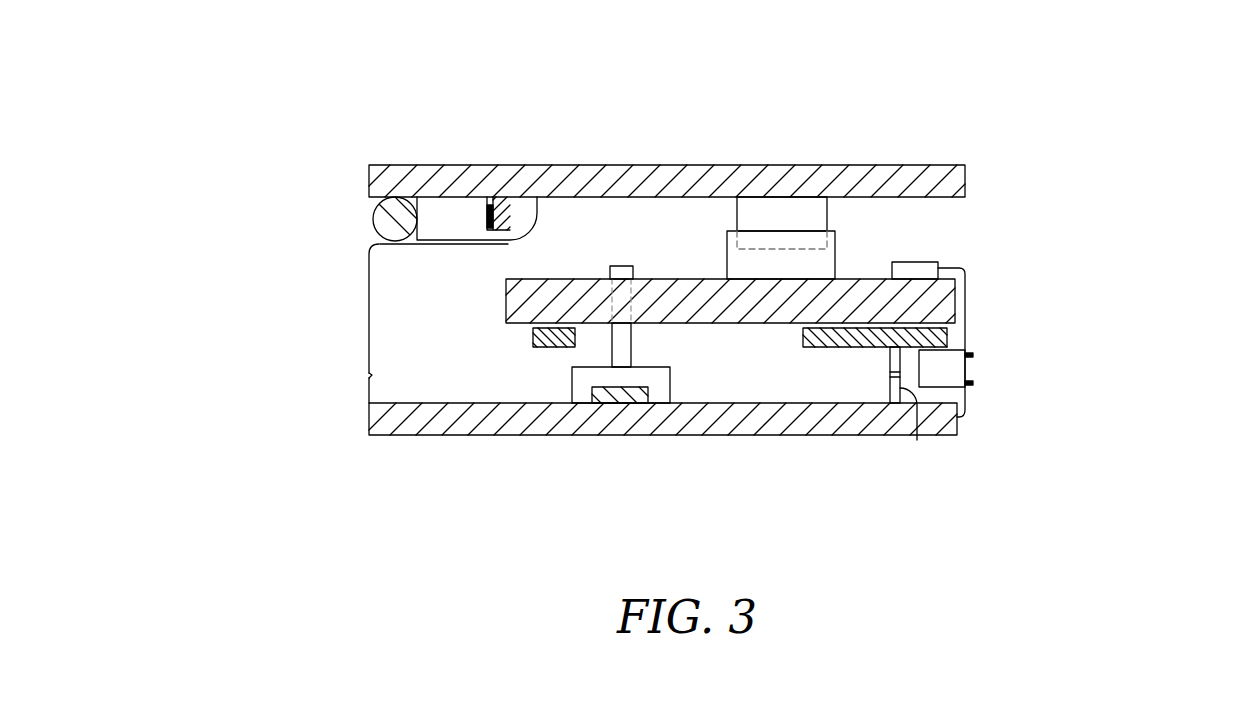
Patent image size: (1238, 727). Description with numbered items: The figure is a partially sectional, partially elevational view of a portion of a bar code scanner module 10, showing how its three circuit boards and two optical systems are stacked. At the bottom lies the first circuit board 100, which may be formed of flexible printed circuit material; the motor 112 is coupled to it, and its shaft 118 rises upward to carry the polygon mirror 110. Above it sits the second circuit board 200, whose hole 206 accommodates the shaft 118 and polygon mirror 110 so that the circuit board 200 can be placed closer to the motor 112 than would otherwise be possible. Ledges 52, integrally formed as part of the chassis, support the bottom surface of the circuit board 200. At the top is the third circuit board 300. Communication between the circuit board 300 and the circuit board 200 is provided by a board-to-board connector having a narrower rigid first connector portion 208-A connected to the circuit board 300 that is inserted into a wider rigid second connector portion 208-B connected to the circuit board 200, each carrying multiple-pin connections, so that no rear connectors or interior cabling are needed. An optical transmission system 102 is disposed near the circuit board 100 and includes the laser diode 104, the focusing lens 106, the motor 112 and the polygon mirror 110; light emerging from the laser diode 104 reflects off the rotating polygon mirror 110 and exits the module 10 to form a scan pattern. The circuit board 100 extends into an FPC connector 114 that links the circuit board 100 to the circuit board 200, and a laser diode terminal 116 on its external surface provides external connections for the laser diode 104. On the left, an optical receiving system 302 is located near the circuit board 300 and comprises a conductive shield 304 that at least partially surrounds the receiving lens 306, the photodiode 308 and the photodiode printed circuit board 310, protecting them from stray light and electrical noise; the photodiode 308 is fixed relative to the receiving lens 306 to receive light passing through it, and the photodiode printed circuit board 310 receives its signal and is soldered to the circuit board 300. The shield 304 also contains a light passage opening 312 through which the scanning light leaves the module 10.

The bar code scanner module 10 is at (420, 110).
The optical receiving system 302 is at (232, 207).
The third circuit board 300 is at (369, 173).
The receiving lens 306 is at (374, 214).
The shield 304 is at (369, 325).
The light passage opening 312 is at (369, 375).
The photodiode 308 is at (487, 222).
The photodiode printed circuit board 310 is at (488, 205).
The first connector portion 208-A is at (827, 213).
The second connector portion 208-B is at (835, 257).
The second circuit board 200 is at (506, 297).
The hole 206 is at (605, 297).
The shaft 118 is at (632, 345).
The polygon mirror 110 is at (670, 387).
The motor 112 is at (632, 393).
The ledge 52 is at (533, 337).
The laser diode 104 is at (963, 402).
The laser diode terminal 116 is at (967, 369).
The optical transmission system 102 is at (1097, 406).
The FPC connector 114 is at (965, 415).
The focusing lens 106 is at (917, 440).
The first circuit board 100 is at (475, 435).